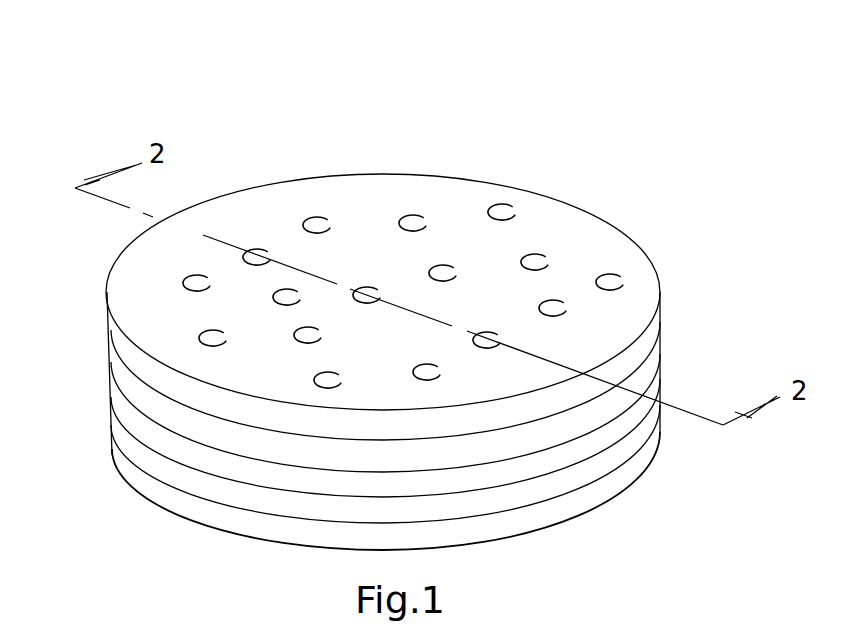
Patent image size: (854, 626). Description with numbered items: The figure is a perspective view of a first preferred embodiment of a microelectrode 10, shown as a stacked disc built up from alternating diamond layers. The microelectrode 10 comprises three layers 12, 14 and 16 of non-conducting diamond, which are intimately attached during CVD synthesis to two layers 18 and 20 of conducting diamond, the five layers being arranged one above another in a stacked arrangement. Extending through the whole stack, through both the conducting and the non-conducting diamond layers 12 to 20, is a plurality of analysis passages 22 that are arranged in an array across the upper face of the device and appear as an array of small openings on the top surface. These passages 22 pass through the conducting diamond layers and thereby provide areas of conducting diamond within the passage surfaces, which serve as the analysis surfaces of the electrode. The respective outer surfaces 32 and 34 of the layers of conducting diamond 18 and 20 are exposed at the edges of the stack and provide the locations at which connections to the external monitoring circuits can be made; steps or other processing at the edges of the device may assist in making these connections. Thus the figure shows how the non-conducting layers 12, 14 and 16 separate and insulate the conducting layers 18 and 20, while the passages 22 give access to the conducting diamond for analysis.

The microelectrode 10 is at (552, 165).
The layer of non-conducting diamond 12 is at (660, 331).
The layer of non-conducting diamond 14 is at (660, 388).
The layer of non-conducting diamond 16 is at (652, 453).
The layer of conducting diamond 18 is at (125, 387).
The layer of conducting diamond 20 is at (125, 440).
The analysis passages 22 is at (537, 260).
The outer surface of conducting diamond layer 32 is at (385, 468).
The outer surface of conducting diamond layer 34 is at (385, 524).